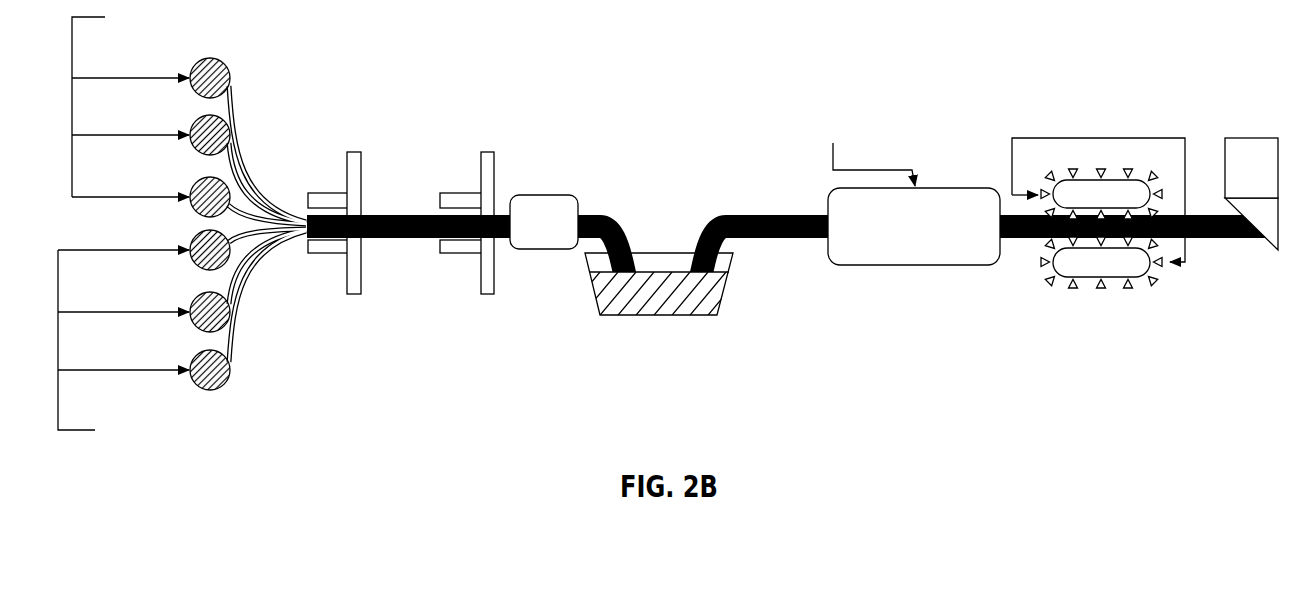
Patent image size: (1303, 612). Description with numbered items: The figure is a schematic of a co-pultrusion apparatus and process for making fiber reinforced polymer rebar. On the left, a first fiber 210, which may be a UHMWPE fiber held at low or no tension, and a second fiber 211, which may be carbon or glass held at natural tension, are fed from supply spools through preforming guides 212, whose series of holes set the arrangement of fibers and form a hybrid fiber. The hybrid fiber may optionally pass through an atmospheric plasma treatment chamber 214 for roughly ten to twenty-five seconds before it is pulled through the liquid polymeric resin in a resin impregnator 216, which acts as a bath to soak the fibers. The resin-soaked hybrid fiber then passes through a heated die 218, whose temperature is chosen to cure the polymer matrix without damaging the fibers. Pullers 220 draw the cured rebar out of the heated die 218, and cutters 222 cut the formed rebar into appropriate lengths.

The first fiber 210 is at (246, 105).
The second fiber 211 is at (255, 327).
The preforming guides 212 is at (347, 144).
The atmospheric plasma treatment chamber 214 is at (543, 184).
The resin impregnator 216 is at (683, 195).
The heated die 218 is at (934, 184).
The pullers 220 is at (1151, 134).
The cutters 222 is at (1257, 128).